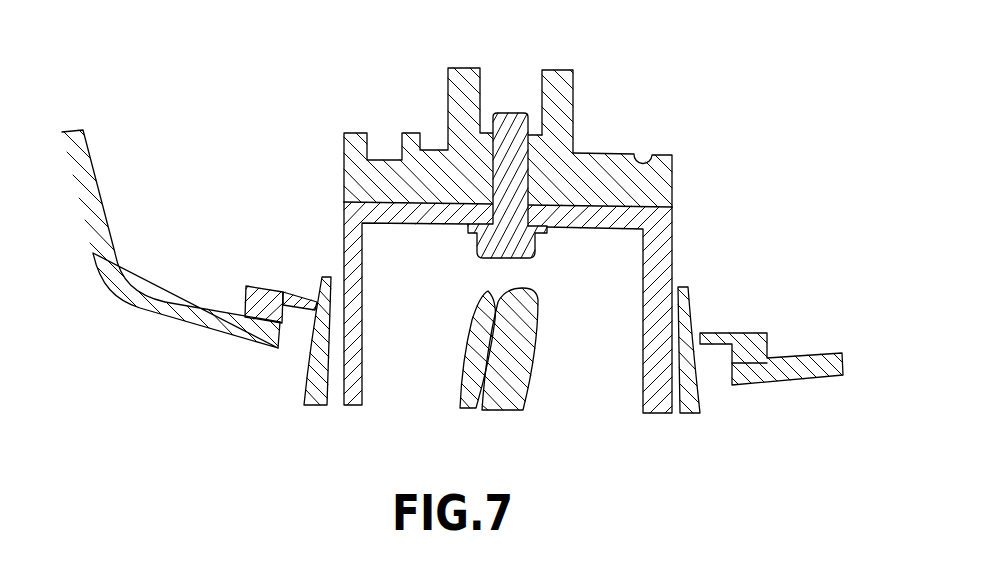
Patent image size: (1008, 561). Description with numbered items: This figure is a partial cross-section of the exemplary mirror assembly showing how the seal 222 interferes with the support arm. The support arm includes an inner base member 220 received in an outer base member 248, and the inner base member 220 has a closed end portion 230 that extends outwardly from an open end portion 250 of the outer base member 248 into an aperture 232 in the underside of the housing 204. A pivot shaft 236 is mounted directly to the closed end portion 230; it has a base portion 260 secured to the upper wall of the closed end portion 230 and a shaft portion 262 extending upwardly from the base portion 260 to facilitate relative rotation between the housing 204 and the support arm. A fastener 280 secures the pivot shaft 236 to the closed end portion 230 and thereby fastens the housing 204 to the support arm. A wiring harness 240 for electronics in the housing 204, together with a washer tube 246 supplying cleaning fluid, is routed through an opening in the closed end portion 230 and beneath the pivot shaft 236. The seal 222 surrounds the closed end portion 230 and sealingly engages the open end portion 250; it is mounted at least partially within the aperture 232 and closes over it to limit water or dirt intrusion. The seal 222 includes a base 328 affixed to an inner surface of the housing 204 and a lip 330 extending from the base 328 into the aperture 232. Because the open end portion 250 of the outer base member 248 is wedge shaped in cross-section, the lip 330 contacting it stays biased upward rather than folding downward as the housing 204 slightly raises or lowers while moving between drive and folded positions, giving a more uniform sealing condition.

The housing 204 is at (159, 277).
The inner base member 220 is at (362, 363).
The seal 222 is at (260, 287).
The closed end portion 230 is at (673, 263).
The aperture 232 is at (278, 350).
The pivot shaft 236 is at (673, 175).
The wiring harness 240 is at (523, 377).
The washer tube 246 is at (463, 347).
The outer base member 248 is at (760, 354).
The open end portion 250 is at (688, 300).
The base portion 260 is at (552, 221).
The shaft portion 262 is at (575, 95).
The fastener 280 is at (510, 110).
The base 328 is at (752, 350).
The lip 330 is at (303, 297).